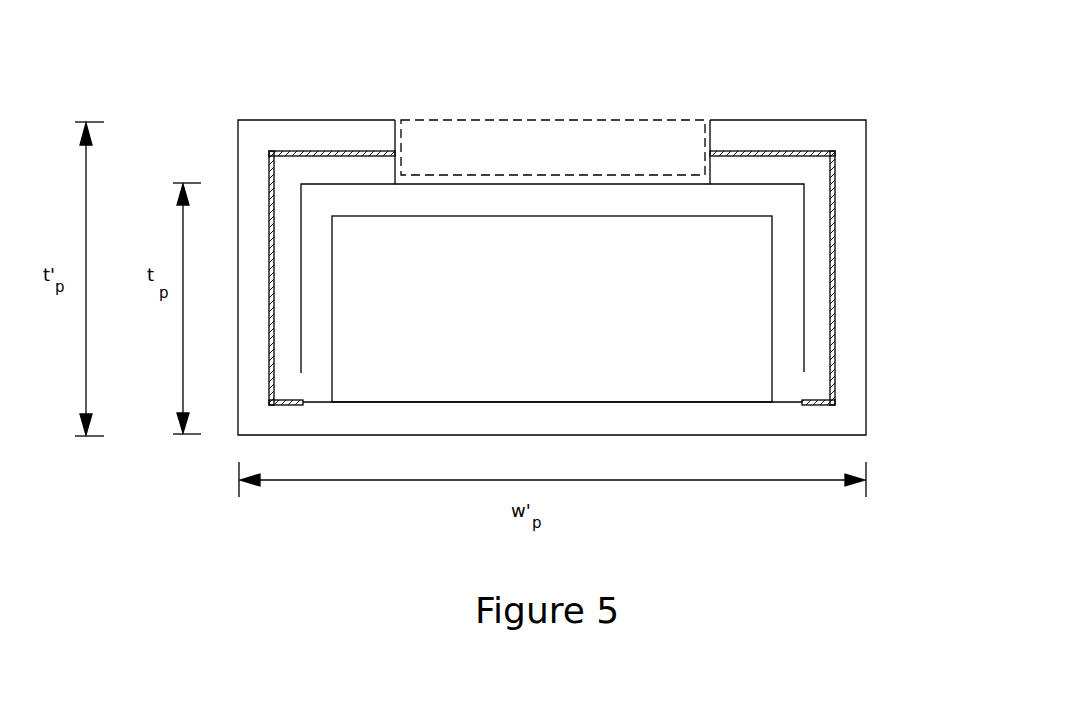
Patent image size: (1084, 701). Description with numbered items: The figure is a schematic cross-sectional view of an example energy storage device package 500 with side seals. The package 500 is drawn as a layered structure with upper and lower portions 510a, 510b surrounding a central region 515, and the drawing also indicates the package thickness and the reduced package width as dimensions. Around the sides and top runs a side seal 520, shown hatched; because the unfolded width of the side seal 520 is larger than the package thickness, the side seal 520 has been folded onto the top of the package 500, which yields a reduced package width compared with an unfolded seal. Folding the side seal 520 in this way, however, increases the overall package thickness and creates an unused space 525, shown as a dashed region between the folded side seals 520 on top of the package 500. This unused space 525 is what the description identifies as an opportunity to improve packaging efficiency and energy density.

The package 500 is at (748, 62).
The upper layer 510a is at (482, 202).
The lower layer 510b is at (618, 417).
The core region 515 is at (569, 320).
The side seal 520 is at (835, 310).
The unused space 525 is at (549, 155).